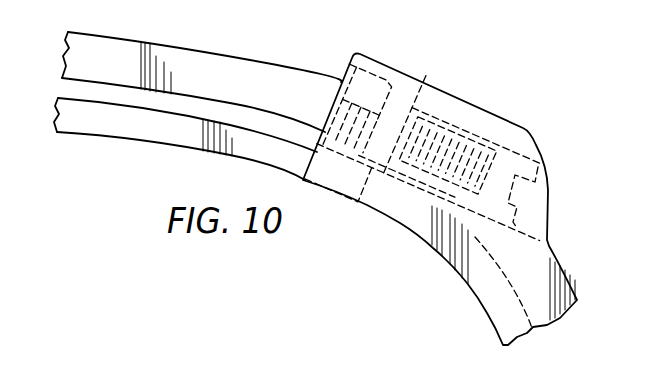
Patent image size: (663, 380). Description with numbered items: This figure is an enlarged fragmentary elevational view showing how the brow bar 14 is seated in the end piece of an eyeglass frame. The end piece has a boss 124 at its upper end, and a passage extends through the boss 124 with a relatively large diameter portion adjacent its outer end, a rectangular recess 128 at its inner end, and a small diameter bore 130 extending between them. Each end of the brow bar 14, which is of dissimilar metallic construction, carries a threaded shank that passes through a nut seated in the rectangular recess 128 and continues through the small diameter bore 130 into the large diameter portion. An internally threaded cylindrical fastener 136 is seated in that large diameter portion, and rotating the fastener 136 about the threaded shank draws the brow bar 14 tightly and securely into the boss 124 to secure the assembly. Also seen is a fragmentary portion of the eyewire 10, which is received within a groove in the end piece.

The eyewire 10 is at (175, 146).
The brow bar 14 is at (278, 67).
The boss 124 is at (490, 112).
The rectangular recess 128 is at (377, 71).
The small diameter bore 130 is at (428, 74).
The internally threaded cylindrical fastener 136 is at (542, 135).